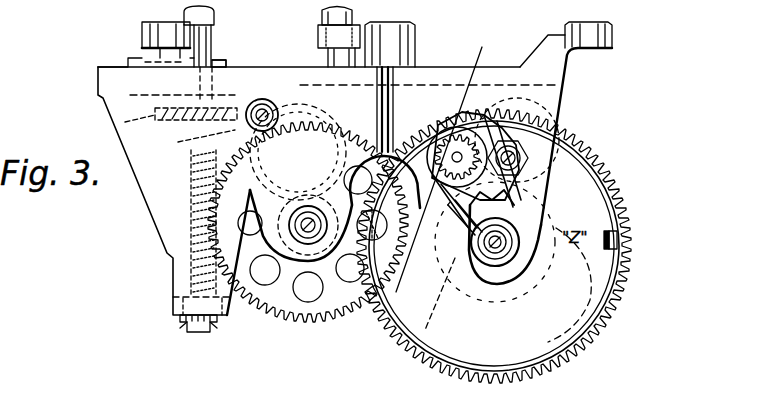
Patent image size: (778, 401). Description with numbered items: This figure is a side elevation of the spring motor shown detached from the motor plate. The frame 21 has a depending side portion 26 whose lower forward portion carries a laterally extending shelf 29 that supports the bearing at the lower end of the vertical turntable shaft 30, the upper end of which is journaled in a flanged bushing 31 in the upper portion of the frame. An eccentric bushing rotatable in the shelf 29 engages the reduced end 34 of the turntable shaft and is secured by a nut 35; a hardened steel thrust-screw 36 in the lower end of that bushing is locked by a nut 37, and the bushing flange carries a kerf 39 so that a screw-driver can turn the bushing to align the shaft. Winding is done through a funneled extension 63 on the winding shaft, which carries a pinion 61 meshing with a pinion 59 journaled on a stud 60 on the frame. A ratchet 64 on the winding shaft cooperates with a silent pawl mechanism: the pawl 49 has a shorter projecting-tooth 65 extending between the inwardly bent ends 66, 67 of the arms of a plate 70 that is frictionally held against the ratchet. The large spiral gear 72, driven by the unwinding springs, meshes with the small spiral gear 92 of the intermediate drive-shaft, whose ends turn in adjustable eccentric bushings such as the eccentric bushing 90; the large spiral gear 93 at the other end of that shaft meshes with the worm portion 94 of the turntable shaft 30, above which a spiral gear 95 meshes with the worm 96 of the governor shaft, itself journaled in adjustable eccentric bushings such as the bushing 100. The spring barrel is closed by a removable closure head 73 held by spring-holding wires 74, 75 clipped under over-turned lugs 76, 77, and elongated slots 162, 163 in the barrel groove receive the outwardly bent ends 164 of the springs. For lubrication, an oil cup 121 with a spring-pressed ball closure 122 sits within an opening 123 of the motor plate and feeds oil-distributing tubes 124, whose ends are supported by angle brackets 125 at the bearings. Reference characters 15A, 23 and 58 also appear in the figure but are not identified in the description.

The arm 15A is at (439, 169).
The frame 21 is at (445, 78).
The bolt head 23 is at (142, 39).
The depending side portion 26 is at (152, 190).
The laterally extending shelf 29 is at (182, 308).
The vertical turntable shaft 30 is at (212, 41).
The flanged bushing 31 is at (214, 65).
The reduced end of the turntable shaft 34 is at (128, 316).
The nut 35 is at (308, 232).
The hardened steel thrust-screw 36 is at (203, 334).
The nut 37 is at (215, 326).
The kerf 39 is at (183, 323).
The pawl 49 is at (462, 266).
The hub 58 is at (470, 324).
The pinion 59 is at (640, 119).
The stud 60 is at (583, 135).
The pinion 61 is at (447, 139).
The funneled extension 63 is at (441, 124).
The ratchet 64 is at (567, 101).
The shorter projecting-tooth 65 is at (468, 228).
The inwardly bent end 66 is at (478, 288).
The inwardly bent end 67 is at (612, 190).
The plate 70 is at (525, 178).
The large spiral gear 72 is at (614, 313).
The removable closure head 73 is at (577, 277).
The spring-holding wire 74 is at (630, 198).
The spring-holding wire 75 is at (412, 342).
The over-turned lug 76 is at (620, 239).
The over-turned lug 77 is at (359, 259).
The eccentric bushing 90 is at (293, 218).
The small spiral gear 92 is at (305, 239).
The large spiral gear 93 is at (294, 322).
The worm portion 94 is at (188, 219).
The spiral gear 95 is at (135, 121).
The worm 96 is at (180, 142).
The adjustable eccentric bushing 100 is at (248, 108).
The oil cup 121 is at (358, 50).
The spring-pressed ball closure 122 is at (350, 15).
The opening 123 is at (612, 44).
The oil-distributing tubes 124 is at (298, 117).
The angle brackets 125 is at (377, 118).
The elongated slot 162 is at (528, 378).
The elongated slot 163 is at (490, 127).
The outwardly bent ends 164 is at (563, 83).